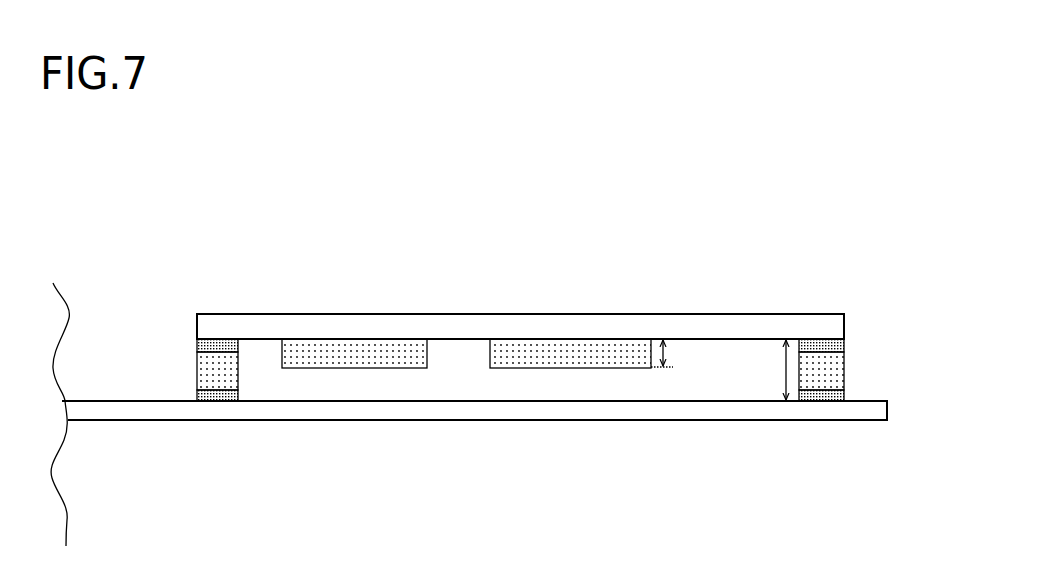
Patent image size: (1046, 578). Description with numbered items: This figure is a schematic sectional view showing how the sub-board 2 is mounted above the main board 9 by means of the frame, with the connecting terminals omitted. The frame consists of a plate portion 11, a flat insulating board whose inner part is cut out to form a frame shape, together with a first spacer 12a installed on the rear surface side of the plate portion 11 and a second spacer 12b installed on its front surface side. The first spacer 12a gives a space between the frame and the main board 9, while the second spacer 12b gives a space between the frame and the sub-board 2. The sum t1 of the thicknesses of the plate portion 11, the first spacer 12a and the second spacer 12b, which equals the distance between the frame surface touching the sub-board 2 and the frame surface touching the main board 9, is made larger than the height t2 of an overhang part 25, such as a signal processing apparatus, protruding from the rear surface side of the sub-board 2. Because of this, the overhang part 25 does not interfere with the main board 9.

The sub-board 2 is at (803, 321).
The main board 9 is at (528, 420).
The plate portion 11 is at (844, 373).
The first spacer 12a is at (196, 390).
The second spacer 12b is at (196, 339).
The overhang part 25 is at (420, 348).
The sum of thicknesses t1 is at (766, 370).
The height of overhang part t2 is at (677, 357).